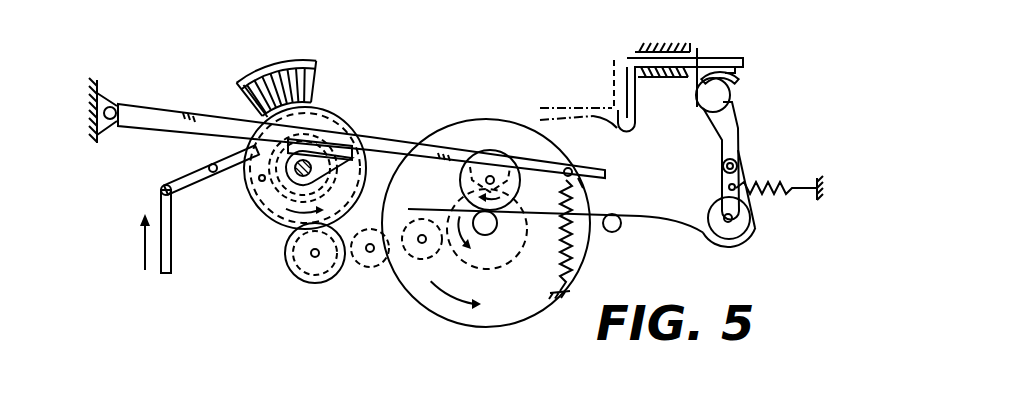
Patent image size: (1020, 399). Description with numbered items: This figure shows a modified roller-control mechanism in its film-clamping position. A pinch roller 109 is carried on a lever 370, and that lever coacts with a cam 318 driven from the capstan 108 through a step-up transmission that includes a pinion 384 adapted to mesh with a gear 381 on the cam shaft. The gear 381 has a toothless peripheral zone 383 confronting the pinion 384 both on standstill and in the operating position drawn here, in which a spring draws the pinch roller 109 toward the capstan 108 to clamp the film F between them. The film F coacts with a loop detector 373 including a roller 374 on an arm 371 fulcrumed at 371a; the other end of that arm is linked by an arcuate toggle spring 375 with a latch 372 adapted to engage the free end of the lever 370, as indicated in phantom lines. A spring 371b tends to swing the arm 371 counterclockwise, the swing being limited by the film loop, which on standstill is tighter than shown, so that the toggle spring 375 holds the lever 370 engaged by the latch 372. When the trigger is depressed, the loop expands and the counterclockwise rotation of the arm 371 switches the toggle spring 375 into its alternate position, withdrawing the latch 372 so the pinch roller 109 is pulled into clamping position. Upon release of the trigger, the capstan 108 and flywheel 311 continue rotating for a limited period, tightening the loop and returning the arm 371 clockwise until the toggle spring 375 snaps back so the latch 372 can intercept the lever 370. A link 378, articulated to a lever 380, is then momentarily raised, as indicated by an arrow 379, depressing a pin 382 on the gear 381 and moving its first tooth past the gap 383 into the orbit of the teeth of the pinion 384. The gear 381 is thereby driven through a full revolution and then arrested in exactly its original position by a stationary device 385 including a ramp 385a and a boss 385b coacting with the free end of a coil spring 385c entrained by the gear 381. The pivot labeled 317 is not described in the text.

The pivot 317 is at (113, 107).
The lever 370 is at (388, 148).
The stationary device 385 is at (271, 60).
The ramp 385a is at (313, 78).
The boss 385b is at (250, 96).
The coil spring 385c is at (320, 91).
The cam 318 is at (335, 158).
The gear 381 is at (260, 213).
The pin 382 is at (259, 181).
The toothless peripheral zone 383 is at (300, 226).
The pinion 384 is at (293, 263).
The lever 380 is at (193, 177).
The link 378 is at (172, 262).
The arrow 379 is at (143, 247).
The flywheel 311 is at (522, 312).
The capstan 108 is at (490, 236).
The pinch roller 109 is at (490, 152).
The toggle spring 375 is at (576, 250).
The latch 372 is at (618, 120).
The arm 371 is at (739, 140).
The fulcrum 371a is at (723, 167).
The spring 371b is at (790, 181).
The roller 374 is at (751, 219).
The loop detector 373 is at (753, 243).
The film F is at (690, 229).